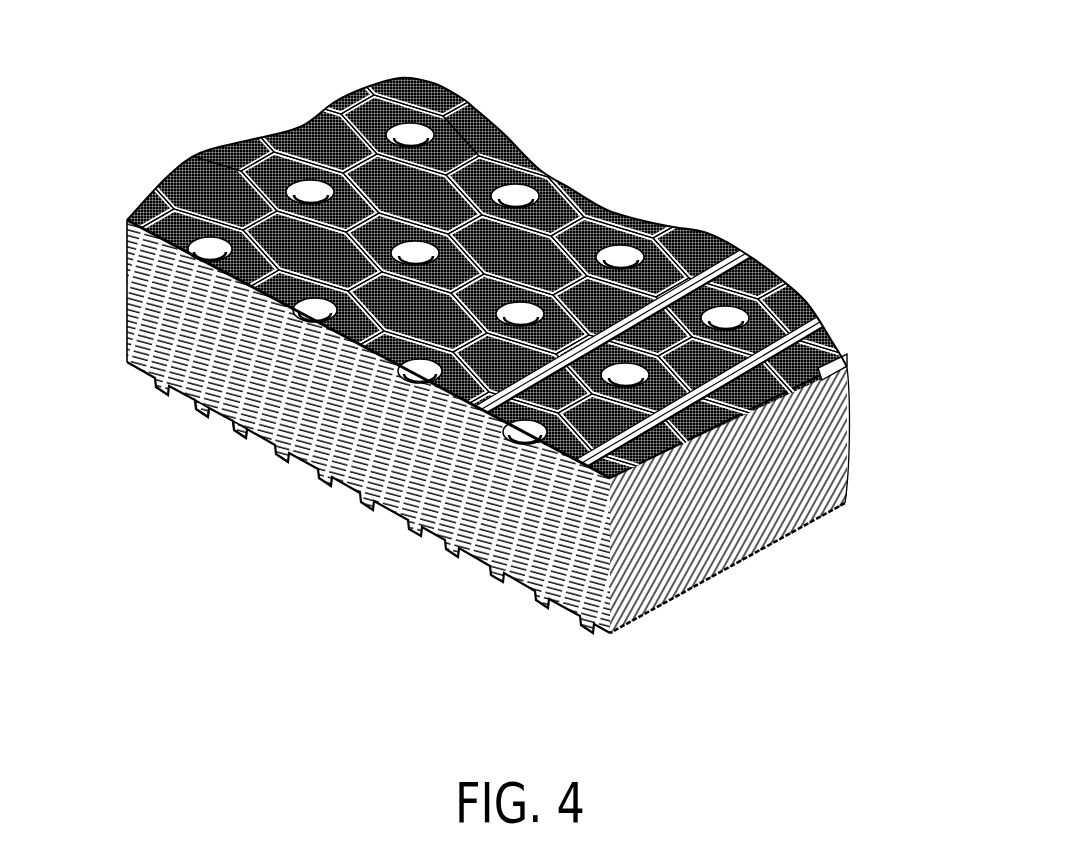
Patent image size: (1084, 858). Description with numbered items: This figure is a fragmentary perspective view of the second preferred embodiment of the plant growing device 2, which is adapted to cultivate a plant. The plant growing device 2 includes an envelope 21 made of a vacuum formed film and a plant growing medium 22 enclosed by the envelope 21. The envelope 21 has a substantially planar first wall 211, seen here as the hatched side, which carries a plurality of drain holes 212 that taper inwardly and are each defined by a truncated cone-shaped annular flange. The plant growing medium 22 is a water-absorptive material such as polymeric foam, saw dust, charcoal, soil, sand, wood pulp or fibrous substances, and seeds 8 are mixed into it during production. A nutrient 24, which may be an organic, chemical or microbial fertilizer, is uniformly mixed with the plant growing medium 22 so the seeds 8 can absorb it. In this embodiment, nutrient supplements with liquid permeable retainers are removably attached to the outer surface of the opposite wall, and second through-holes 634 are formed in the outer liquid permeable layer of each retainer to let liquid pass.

The plant growing device 2 is at (603, 142).
The seeds 8 is at (126, 312).
The envelope 21 is at (490, 587).
The plant growing medium 22 is at (345, 448).
The nutrient 24 is at (395, 510).
The first wall 211 is at (228, 416).
The drain holes 212 is at (200, 403).
The second through-holes 634 is at (833, 380).